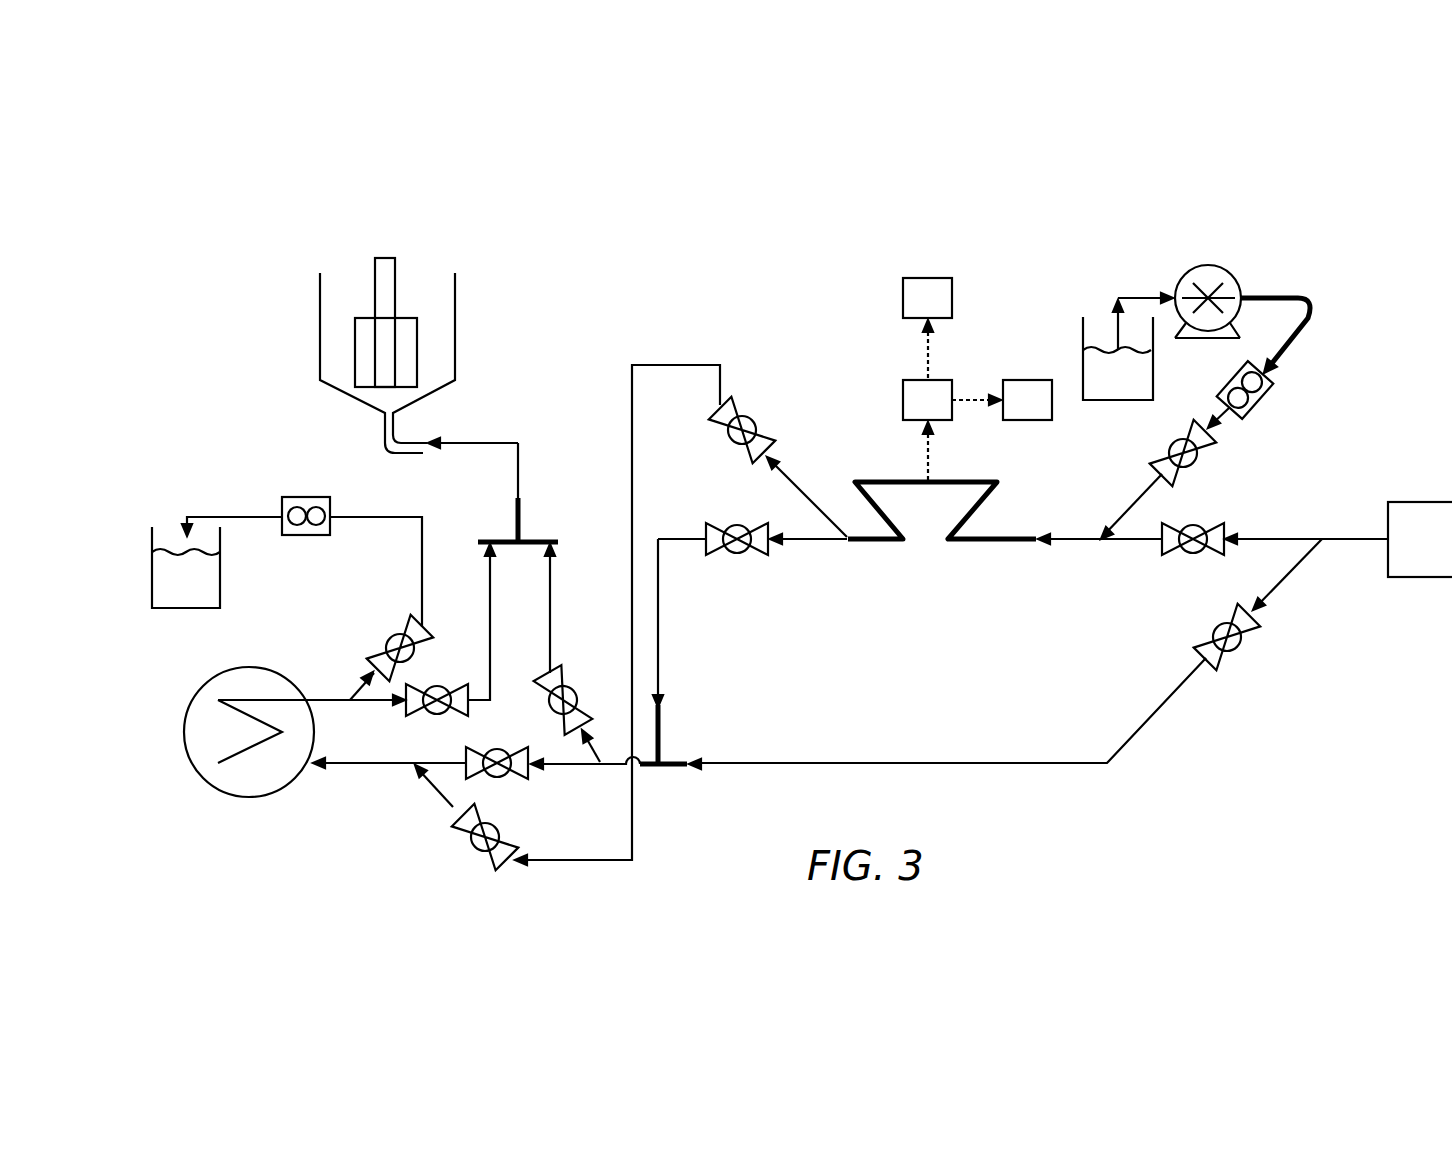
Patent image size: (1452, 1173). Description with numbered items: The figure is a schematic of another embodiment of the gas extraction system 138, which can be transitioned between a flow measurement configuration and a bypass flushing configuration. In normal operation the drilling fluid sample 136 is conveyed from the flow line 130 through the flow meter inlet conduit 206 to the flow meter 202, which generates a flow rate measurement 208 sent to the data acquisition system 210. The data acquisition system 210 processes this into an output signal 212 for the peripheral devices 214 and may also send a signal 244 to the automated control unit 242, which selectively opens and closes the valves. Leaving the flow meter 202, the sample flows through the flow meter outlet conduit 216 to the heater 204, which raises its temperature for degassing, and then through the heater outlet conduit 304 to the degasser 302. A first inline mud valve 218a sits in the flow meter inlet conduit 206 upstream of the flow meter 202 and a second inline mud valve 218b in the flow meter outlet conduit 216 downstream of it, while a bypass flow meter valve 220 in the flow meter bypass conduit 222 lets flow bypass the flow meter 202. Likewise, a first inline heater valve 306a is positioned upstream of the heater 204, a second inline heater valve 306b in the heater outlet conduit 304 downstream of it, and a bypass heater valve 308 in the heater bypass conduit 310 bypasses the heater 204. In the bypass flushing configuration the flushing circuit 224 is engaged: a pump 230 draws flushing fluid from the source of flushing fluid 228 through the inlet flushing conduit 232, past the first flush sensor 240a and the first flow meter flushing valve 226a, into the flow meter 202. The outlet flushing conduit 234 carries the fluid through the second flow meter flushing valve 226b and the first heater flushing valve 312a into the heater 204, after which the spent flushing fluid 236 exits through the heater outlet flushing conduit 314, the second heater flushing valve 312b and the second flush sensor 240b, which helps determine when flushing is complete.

The flow line 130 is at (1420, 539).
The drilling fluid sample 136 is at (1306, 510).
The gas extraction system 138 is at (1173, 185).
The flow meter 202 is at (863, 481).
The heater 204 is at (250, 667).
The flow meter inlet conduit 206 is at (1070, 542).
The flow rate measurement 208 is at (924, 460).
The data acquisition system 210 is at (912, 412).
The output signal 212 is at (925, 350).
The peripheral devices 214 is at (912, 310).
The flow meter outlet conduit 216 is at (660, 622).
The first inline mud valve 218a is at (1190, 556).
The second inline mud valve 218b is at (740, 556).
The bypass flow meter valve 220 is at (1212, 630).
The flow meter bypass conduit 222 is at (915, 763).
The flushing circuit 224 is at (1017, 293).
The first flow meter flushing valve 226a is at (1205, 465).
The second flow meter flushing valve 226b is at (770, 425).
The source of flushing fluid 228 is at (1102, 382).
The pump 230 is at (1236, 275).
The inlet flushing conduit 232 is at (1130, 502).
The outlet flushing conduit 234 is at (776, 468).
The spent flushing fluid 236 is at (170, 590).
The first flush sensor 240a is at (1274, 386).
The second flush sensor 240b is at (308, 497).
The automated control unit 242 is at (1012, 412).
The signal 244 is at (975, 406).
The degasser 302 is at (457, 319).
The heater outlet conduit 304 is at (375, 702).
The first inline heater valve 306a is at (497, 780).
The second inline heater valve 306b is at (440, 716).
The bypass heater valve 308 is at (585, 692).
The heater bypass conduit 310 is at (551, 600).
The first heater flushing valve 312a is at (465, 849).
The second heater flushing valve 312b is at (385, 642).
The heater outlet flushing conduit 314 is at (421, 566).